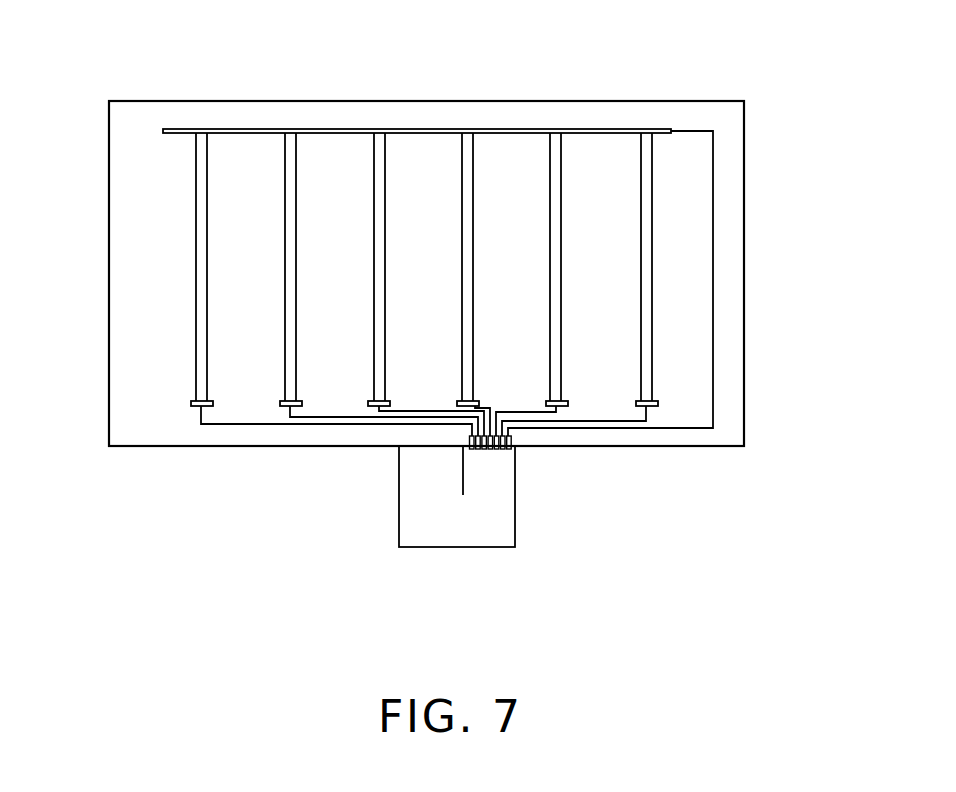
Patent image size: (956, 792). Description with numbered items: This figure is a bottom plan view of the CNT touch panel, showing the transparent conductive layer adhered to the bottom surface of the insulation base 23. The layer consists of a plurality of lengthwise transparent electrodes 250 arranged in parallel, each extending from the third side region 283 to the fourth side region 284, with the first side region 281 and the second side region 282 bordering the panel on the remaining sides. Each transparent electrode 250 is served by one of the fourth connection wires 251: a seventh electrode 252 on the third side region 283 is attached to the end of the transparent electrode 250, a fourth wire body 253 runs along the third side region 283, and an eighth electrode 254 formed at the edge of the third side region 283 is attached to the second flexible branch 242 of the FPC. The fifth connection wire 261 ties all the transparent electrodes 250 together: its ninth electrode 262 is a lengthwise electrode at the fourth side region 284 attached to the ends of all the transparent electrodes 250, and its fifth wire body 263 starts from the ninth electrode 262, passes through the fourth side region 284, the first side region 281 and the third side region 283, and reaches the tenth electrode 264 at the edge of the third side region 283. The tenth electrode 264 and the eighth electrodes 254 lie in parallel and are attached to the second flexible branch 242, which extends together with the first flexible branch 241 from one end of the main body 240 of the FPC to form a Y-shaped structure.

The base 23 is at (652, 108).
The main body 240 is at (452, 535).
The first flexible branch 241 is at (422, 475).
The second flexible branch 242 is at (493, 475).
The transparent electrodes 250 is at (648, 283).
The fourth connection wires 251 is at (363, 418).
The seventh electrode 252 is at (191, 403).
The fourth wire body 253 is at (246, 427).
The eighth electrode 254 is at (472, 447).
The fifth connection wire 261 is at (713, 152).
The ninth electrode 262 is at (508, 130).
The fifth wire body 263 is at (690, 427).
The tenth electrode 264 is at (513, 444).
The first side region 281 is at (723, 193).
The second side region 282 is at (155, 210).
The third side region 283 is at (337, 437).
The fourth side region 284 is at (285, 110).